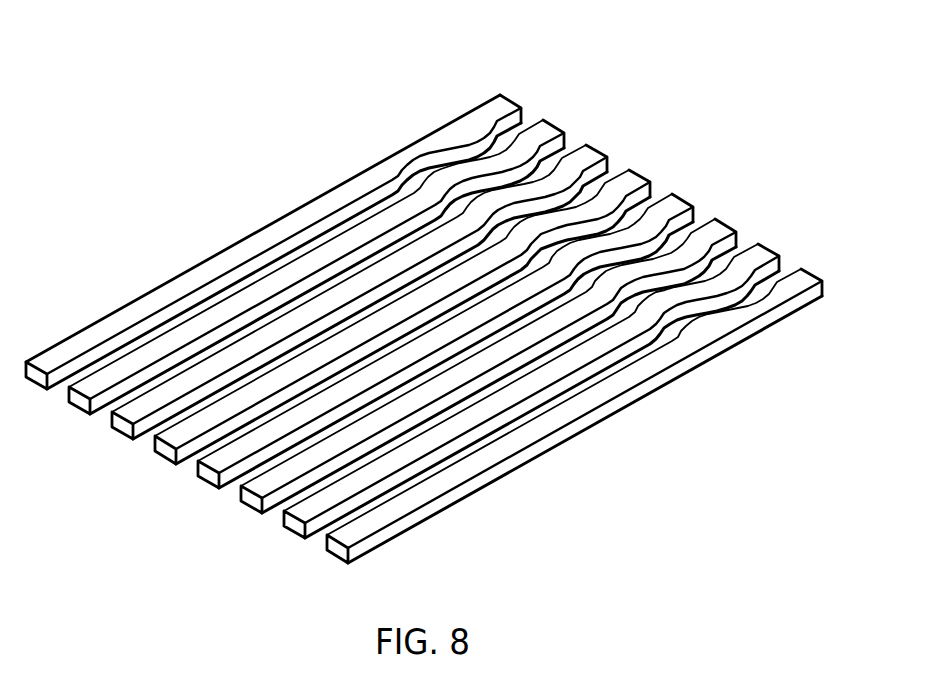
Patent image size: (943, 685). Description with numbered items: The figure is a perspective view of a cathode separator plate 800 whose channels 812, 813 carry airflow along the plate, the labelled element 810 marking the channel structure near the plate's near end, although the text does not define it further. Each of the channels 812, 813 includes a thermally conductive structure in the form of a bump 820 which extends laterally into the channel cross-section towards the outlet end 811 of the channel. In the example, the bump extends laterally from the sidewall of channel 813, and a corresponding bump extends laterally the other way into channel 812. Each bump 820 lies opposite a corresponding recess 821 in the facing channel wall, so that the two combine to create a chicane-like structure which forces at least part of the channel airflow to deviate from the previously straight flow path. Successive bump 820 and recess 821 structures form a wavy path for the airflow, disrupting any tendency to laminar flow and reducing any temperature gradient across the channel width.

The separator plate 800 is at (423, 298).
The ridge 810 is at (97, 427).
The outlet end 811 is at (601, 136).
The channel 812 is at (143, 453).
The channel 813 is at (232, 501).
The bump 820 is at (632, 302).
The recess 821 is at (705, 340).